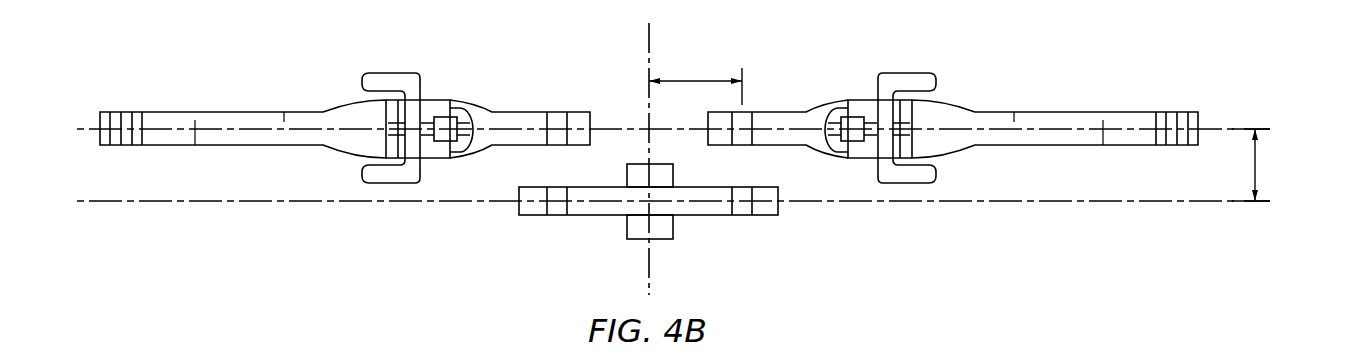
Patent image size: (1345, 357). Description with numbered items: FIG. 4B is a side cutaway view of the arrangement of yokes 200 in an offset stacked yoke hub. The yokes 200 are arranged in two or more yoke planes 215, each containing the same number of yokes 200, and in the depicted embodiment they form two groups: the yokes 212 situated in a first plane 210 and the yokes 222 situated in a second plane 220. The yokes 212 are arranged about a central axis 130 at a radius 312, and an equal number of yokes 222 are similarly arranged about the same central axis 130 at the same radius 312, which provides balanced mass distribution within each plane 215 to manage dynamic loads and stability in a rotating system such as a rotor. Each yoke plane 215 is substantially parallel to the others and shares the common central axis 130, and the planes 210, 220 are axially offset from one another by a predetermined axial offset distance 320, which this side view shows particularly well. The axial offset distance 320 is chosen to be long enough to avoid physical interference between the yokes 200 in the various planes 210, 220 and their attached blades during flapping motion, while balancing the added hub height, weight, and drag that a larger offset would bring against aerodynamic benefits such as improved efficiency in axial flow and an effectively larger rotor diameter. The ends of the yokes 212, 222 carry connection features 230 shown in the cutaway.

The central axis 130 is at (647, 36).
The yokes 200 is at (650, 165).
The yokes situated in a first plane 212 is at (175, 112).
The yokes situated in a second plane 222 is at (590, 216).
The attachment band / connector 230 is at (555, 112).
The first plane 210 is at (1248, 129).
The second plane 220 is at (1103, 201).
The yoke planes 215 is at (1240, 129).
The radius 312 is at (697, 81).
The predetermined axial offset distance 320 is at (1255, 162).